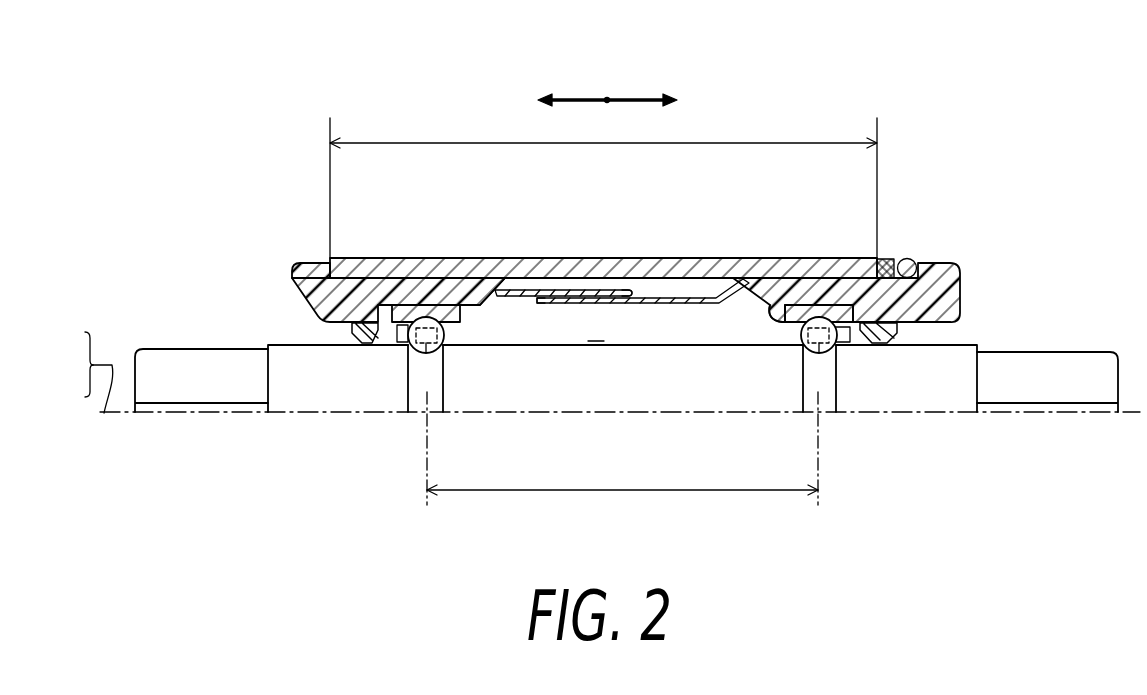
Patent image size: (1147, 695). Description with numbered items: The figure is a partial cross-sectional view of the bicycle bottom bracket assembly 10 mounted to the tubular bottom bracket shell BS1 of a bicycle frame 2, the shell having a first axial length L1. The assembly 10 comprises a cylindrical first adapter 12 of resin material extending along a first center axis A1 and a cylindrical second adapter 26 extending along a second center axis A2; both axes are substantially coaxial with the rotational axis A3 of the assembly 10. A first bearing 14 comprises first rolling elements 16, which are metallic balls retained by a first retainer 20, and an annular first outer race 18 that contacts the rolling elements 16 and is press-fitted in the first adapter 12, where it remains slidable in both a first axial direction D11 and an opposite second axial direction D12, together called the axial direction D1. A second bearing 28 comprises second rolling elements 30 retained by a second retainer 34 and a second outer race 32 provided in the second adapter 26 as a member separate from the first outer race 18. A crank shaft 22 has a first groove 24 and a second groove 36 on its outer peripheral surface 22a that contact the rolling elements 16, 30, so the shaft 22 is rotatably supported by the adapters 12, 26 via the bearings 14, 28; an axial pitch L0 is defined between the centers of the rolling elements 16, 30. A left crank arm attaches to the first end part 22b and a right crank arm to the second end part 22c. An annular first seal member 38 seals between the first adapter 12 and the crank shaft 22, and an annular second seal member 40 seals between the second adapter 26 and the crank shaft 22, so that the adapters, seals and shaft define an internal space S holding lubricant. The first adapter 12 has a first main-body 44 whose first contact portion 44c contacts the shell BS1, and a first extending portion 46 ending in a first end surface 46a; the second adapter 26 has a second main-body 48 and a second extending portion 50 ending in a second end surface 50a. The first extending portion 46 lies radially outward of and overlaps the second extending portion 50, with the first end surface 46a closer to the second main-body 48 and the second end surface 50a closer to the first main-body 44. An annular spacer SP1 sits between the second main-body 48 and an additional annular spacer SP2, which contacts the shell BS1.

The bicycle frame 2 is at (632, 252).
The bicycle bottom bracket assembly 10 is at (975, 200).
The first adapter 12 is at (580, 183).
The first bearing 14 is at (480, 213).
The first rolling elements 16 is at (445, 296).
The first outer race 18 is at (464, 305).
The first retainer 20 is at (398, 305).
The crank shaft 22 is at (245, 318).
The outer peripheral surface 22a is at (287, 353).
The first end part 22b is at (178, 365).
The second end part 22c is at (1045, 368).
The first groove 24 is at (437, 398).
The second adapter 26 is at (745, 180).
The second bearing 28 is at (870, 201).
The second rolling elements 30 is at (797, 300).
The second outer race 32 is at (780, 306).
The second retainer 34 is at (853, 300).
The second groove 36 is at (807, 398).
The first seal member 38 is at (345, 337).
The second seal member 40 is at (910, 337).
The first main-body 44 is at (470, 278).
The first contact portion 44c is at (322, 262).
The first extending portion 46 is at (548, 293).
The first end surface 46a is at (656, 300).
The second main-body 48 is at (768, 284).
The second extending portion 50 is at (695, 301).
The second end surface 50a is at (538, 303).
The bottom bracket shell BS1 is at (617, 259).
The spacer SP1 is at (908, 258).
The additional spacer SP2 is at (887, 258).
The internal space S is at (596, 327).
The axial direction D1 is at (660, 49).
The first axial direction D11 is at (568, 98).
The second axial direction D12 is at (647, 98).
The axial pitch L0 is at (622, 448).
The first axial length L1 is at (603, 185).
The first center axis A1 is at (77, 344).
The second center axis A2 is at (87, 381).
The rotational axis A3 is at (77, 385).